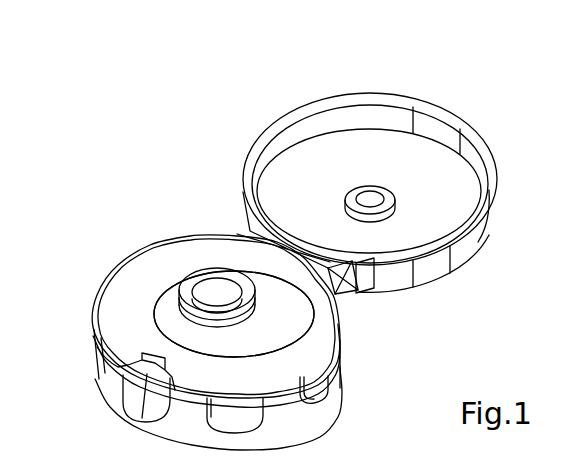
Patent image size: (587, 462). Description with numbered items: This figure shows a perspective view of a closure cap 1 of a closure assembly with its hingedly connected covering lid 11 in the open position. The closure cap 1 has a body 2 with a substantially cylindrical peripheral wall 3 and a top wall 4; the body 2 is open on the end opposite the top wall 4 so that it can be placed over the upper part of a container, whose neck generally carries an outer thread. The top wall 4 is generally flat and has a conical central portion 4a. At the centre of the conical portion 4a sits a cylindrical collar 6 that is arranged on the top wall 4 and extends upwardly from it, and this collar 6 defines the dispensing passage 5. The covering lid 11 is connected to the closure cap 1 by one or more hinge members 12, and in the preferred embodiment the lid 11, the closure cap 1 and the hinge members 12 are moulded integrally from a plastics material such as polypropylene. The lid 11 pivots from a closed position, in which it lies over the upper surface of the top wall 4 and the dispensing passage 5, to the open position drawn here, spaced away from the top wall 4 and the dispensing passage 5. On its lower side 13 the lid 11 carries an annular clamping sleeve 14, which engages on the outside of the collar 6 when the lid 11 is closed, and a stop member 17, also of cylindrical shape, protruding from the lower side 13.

The closure cap 1 is at (133, 230).
The body 2 is at (287, 346).
The peripheral wall 3 is at (282, 420).
The top wall 4 is at (268, 366).
The conical central portion 4a is at (300, 317).
The dispensing passage 5 is at (217, 290).
The cylindrical collar 6 is at (300, 317).
The covering lid 11 is at (358, 113).
The hinge member 12 is at (360, 297).
The lower side 13 is at (422, 197).
The annular clamping sleeve 14 is at (382, 208).
The stop member 17 is at (370, 187).